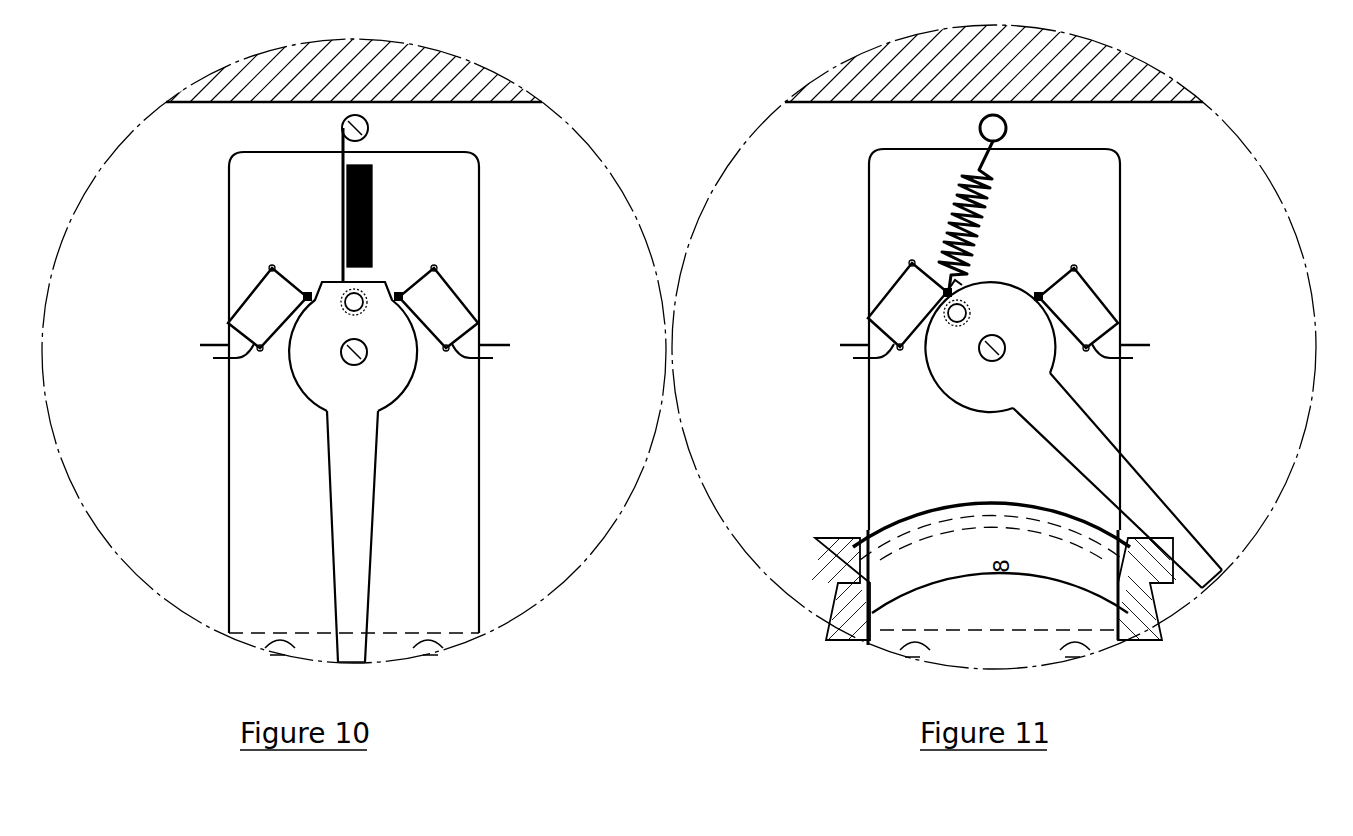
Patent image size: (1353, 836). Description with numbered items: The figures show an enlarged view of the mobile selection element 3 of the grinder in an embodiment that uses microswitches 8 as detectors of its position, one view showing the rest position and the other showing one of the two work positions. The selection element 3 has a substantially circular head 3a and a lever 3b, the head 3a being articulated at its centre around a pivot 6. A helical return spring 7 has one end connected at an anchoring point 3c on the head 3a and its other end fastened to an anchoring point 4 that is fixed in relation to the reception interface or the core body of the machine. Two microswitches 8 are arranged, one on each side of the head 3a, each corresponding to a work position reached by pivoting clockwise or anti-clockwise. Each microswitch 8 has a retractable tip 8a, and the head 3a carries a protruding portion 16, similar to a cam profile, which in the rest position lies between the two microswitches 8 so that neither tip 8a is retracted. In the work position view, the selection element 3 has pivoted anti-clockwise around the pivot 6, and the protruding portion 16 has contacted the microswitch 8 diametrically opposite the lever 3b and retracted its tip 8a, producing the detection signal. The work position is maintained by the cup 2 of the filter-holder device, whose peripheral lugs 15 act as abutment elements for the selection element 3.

In FIG. 11, the cup 2 is at (930, 503).
In FIG. 10, the selection element 3 is at (380, 475).
In FIG. 11, the selection element 3 is at (1140, 472).
In FIG. 10, the head 3a is at (320, 380).
In FIG. 11, the head 3a is at (1028, 355).
In FIG. 10, the lever 3b is at (340, 560).
In FIG. 11, the lever 3b is at (1185, 545).
In FIG. 10, the anchoring point 3c is at (365, 295).
In FIG. 11, the anchoring point 3c is at (1040, 300).
In FIG. 10, the anchoring point 4 is at (342, 128).
In FIG. 11, the anchoring point 4 is at (1006, 124).
In FIG. 10, the pivot 6 is at (345, 358).
In FIG. 11, the pivot 6 is at (985, 357).
In FIG. 10, the return spring 7 is at (372, 215).
In FIG. 11, the return spring 7 is at (965, 200).
In FIG. 10, the microswitch 8 is at (265, 310).
In FIG. 11, the microswitch 8 is at (900, 318).
In FIG. 10, the retractable tip 8a is at (310, 292).
In FIG. 11, the retractable tip 8a is at (1040, 292).
In FIG. 11, the lug 15 is at (815, 585).
In FIG. 11, the protruding portion 16 is at (945, 290).